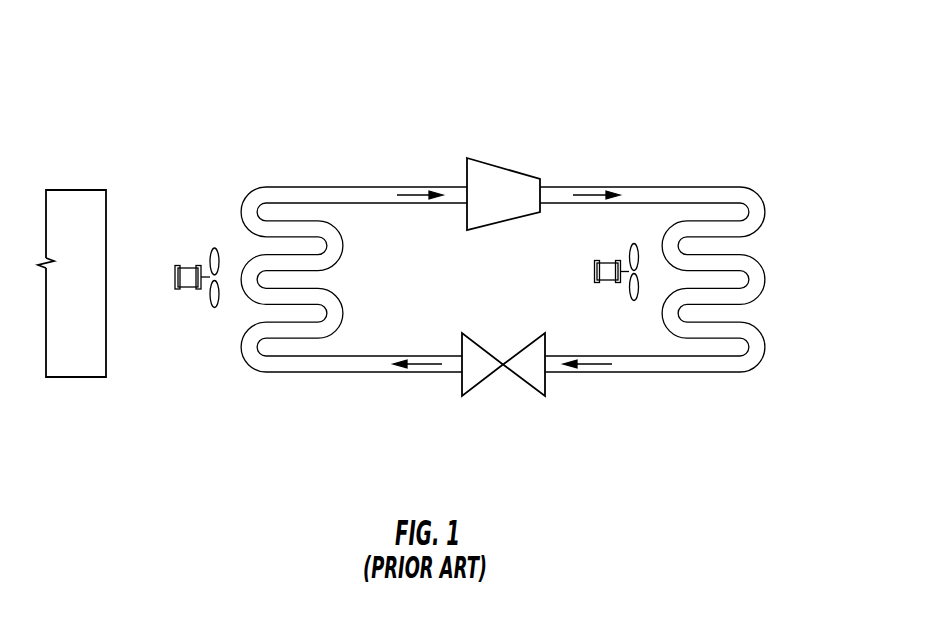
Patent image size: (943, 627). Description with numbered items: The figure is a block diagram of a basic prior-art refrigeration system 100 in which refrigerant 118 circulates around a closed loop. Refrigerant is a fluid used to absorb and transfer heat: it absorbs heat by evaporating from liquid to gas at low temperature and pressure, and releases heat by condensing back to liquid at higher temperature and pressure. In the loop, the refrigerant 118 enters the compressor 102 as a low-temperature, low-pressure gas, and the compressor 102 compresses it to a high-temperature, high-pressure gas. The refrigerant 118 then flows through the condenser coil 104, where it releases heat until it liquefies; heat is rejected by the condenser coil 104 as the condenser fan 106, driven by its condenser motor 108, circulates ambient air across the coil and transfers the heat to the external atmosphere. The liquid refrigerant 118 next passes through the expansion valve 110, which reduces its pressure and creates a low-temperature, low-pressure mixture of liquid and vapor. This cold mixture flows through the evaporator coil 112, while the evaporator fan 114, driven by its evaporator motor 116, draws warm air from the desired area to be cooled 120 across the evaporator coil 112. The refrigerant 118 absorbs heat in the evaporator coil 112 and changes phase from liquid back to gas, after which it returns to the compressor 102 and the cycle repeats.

The refrigeration system 100 is at (212, 76).
The compressor 102 is at (512, 165).
The condenser coil 104 is at (765, 215).
The condenser fan 106 is at (629, 292).
The condenser motor 108 is at (603, 262).
The expansion valve 110 is at (483, 378).
The evaporator coil 112 is at (243, 194).
The evaporator fan 114 is at (215, 309).
The evaporator motor 116 is at (188, 289).
The refrigerant 118 is at (417, 187).
The desired area to be cooled 120 is at (90, 296).